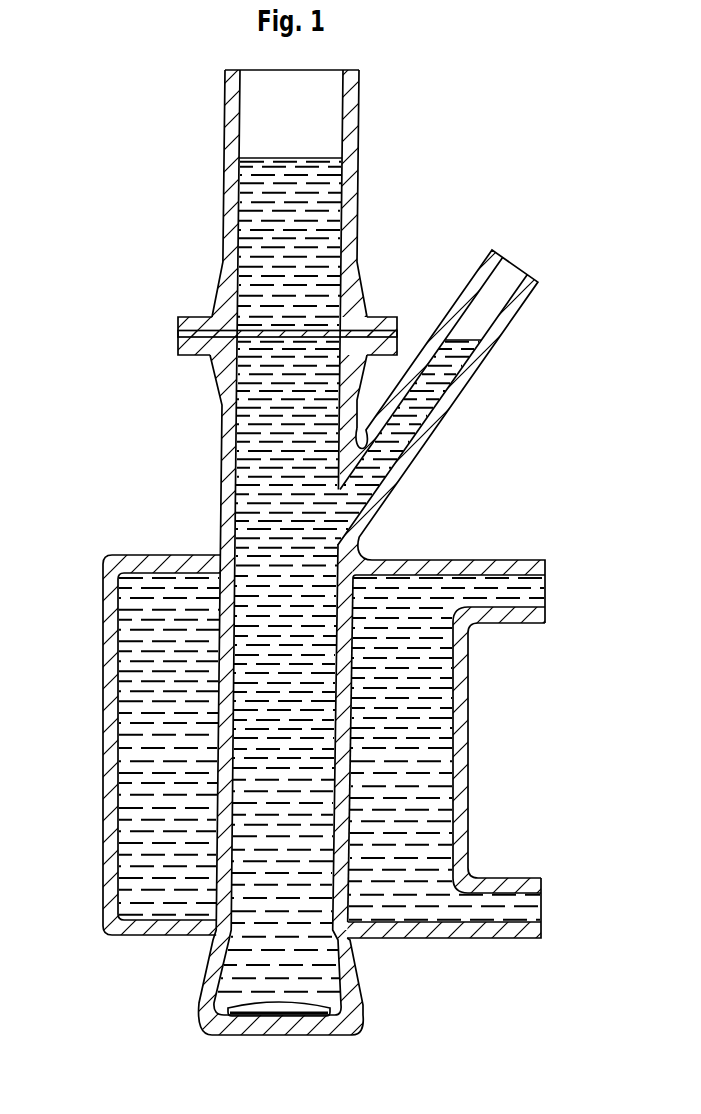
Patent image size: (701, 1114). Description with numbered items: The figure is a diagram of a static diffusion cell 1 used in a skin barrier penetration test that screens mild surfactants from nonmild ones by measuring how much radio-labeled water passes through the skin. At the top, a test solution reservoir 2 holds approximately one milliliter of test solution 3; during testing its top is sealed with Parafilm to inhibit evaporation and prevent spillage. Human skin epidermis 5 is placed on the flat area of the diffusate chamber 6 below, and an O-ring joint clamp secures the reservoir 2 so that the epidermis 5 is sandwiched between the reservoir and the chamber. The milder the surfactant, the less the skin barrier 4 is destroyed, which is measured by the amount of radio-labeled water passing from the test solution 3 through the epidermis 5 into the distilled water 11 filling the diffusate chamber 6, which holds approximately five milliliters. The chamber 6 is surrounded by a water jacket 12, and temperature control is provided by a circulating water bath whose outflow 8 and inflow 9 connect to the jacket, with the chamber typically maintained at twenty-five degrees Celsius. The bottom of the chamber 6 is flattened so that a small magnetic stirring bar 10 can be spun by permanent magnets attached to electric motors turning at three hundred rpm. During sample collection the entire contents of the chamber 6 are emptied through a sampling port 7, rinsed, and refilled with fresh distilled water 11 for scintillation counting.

The static diffusion cell 1 is at (138, 308).
The test solution reservoir 2 is at (208, 155).
The test solution 3 is at (317, 203).
The skin barrier 4 is at (320, 330).
The skin epidermis 5 is at (213, 332).
The diffusate chamber 6 is at (207, 443).
The sampling port 7 is at (497, 290).
The outflow 8 is at (552, 590).
The inflow 9 is at (551, 910).
The magnetic stirring bar 10 is at (245, 1005).
The distilled water 11 is at (278, 612).
The water jacket 12 is at (162, 717).